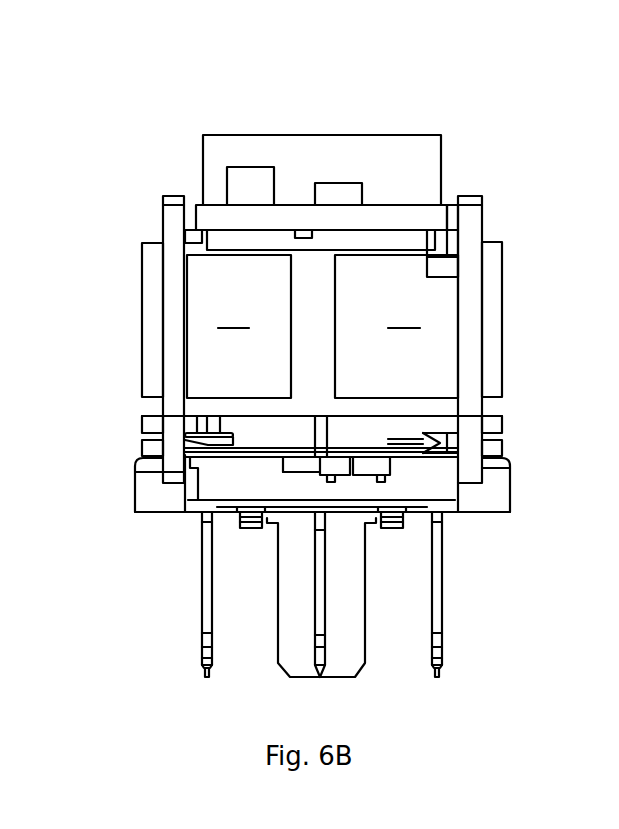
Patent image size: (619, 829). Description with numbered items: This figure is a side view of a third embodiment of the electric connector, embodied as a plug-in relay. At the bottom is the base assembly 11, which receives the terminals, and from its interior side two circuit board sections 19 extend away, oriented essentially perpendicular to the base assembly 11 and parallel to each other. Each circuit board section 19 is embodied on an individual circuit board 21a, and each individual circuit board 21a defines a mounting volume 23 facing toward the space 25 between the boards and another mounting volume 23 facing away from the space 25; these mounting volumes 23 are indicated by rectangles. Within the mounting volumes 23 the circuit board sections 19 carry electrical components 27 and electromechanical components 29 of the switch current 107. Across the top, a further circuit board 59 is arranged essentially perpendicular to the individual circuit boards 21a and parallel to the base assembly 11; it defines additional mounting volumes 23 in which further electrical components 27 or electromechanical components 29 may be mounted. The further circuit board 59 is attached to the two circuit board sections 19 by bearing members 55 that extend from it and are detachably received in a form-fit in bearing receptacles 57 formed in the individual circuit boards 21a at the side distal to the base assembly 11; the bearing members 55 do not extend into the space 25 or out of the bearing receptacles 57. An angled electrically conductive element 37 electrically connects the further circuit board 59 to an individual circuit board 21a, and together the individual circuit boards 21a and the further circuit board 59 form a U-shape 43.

The switch current 107 is at (392, 65).
The electromechanical component 29 is at (246, 185).
The electrical component 27 is at (303, 231).
The mounting volume 23 is at (152, 255).
The further circuit board 59 is at (449, 217).
The bearing member 55 is at (427, 217).
The bearing receptacle 57 is at (158, 218).
The circuit board section 19 is at (175, 332).
The U-shape 43 is at (183, 178).
The electrically conductive element 37 is at (188, 248).
The individual circuit board 21a is at (175, 388).
The space 25 is at (313, 340).
The base assembly 11 is at (168, 497).